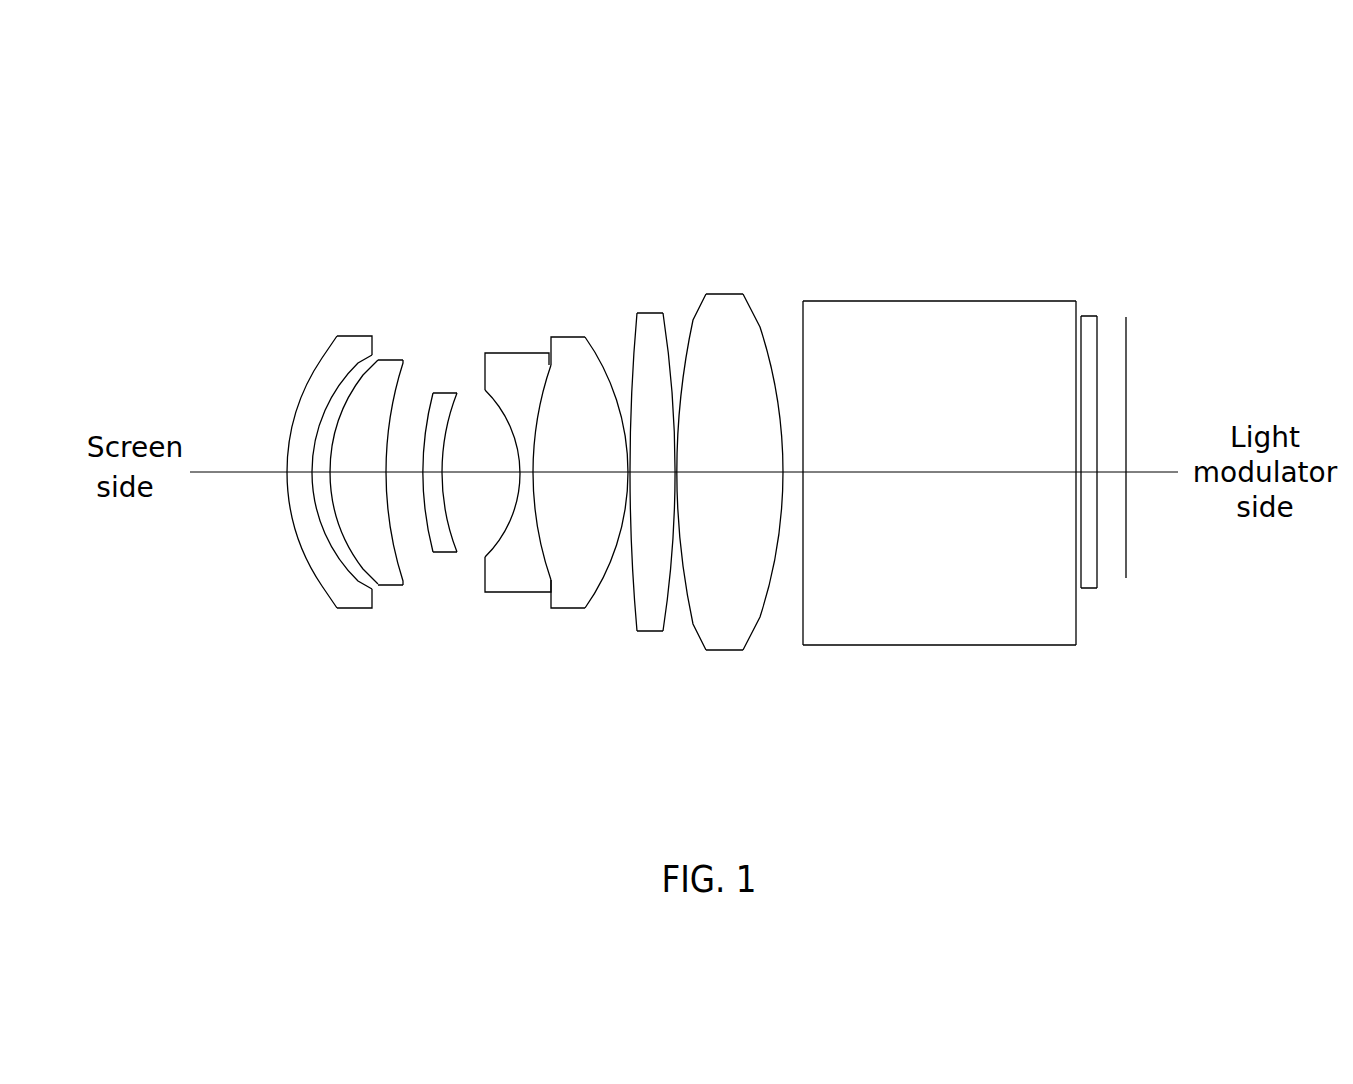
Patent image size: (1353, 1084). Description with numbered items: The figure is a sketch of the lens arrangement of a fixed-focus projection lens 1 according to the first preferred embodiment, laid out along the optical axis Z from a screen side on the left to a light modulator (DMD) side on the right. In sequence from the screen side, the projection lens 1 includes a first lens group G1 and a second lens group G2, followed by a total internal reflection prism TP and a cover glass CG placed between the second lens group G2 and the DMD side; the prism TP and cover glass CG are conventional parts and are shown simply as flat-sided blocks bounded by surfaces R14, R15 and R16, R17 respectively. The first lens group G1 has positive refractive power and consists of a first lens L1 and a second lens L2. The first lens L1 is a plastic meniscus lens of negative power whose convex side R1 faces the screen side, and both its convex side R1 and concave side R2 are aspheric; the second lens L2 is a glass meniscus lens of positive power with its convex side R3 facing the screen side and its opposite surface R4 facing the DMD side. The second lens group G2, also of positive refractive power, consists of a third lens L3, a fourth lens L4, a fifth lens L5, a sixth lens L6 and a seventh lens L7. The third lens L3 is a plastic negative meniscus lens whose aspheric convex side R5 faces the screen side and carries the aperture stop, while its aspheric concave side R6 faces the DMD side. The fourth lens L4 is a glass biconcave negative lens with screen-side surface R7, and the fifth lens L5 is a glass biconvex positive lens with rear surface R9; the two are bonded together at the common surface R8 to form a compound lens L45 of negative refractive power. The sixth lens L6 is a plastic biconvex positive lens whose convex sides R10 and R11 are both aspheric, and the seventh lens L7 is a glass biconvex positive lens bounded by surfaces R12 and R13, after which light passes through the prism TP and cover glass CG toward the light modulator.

The fixed-focus projection lens 1 is at (213, 165).
The optical axis Z is at (215, 473).
The first lens group G1 is at (425, 729).
The second lens group G2 is at (440, 731).
The first lens L1 is at (350, 610).
The second lens L2 is at (395, 588).
The third lens L3 is at (445, 554).
The fourth lens L4 is at (520, 594).
The fifth lens L5 is at (568, 610).
The compound lens L45 is at (503, 691).
The sixth lens L6 is at (650, 633).
The seventh lens L7 is at (725, 652).
The convex side of first lens R1 is at (323, 356).
The concave side of first lens R2 is at (360, 362).
The convex side of second lens R3 is at (378, 360).
The side of second lens R4 is at (401, 368).
The convex side of third lens R5 is at (430, 405).
The concave side of third lens R6 is at (458, 395).
The side of fourth lens R7 is at (492, 400).
The side of fourth and fifth lenses R8 is at (550, 355).
The side of fifth lens R9 is at (596, 350).
The convex side of sixth lens R10 is at (636, 318).
The convex side of sixth lens R11 is at (666, 318).
The side of seventh lens R12 is at (694, 322).
The side of seventh lens R13 is at (761, 330).
The side of total internal reflection prism R14 is at (803, 318).
The side of total internal reflection prism R15 is at (1076, 315).
The side of cover glass R16 is at (1081, 332).
The side of cover glass R17 is at (1097, 338).
The total internal reflection prism TP is at (945, 647).
The cover glass CG is at (1088, 590).